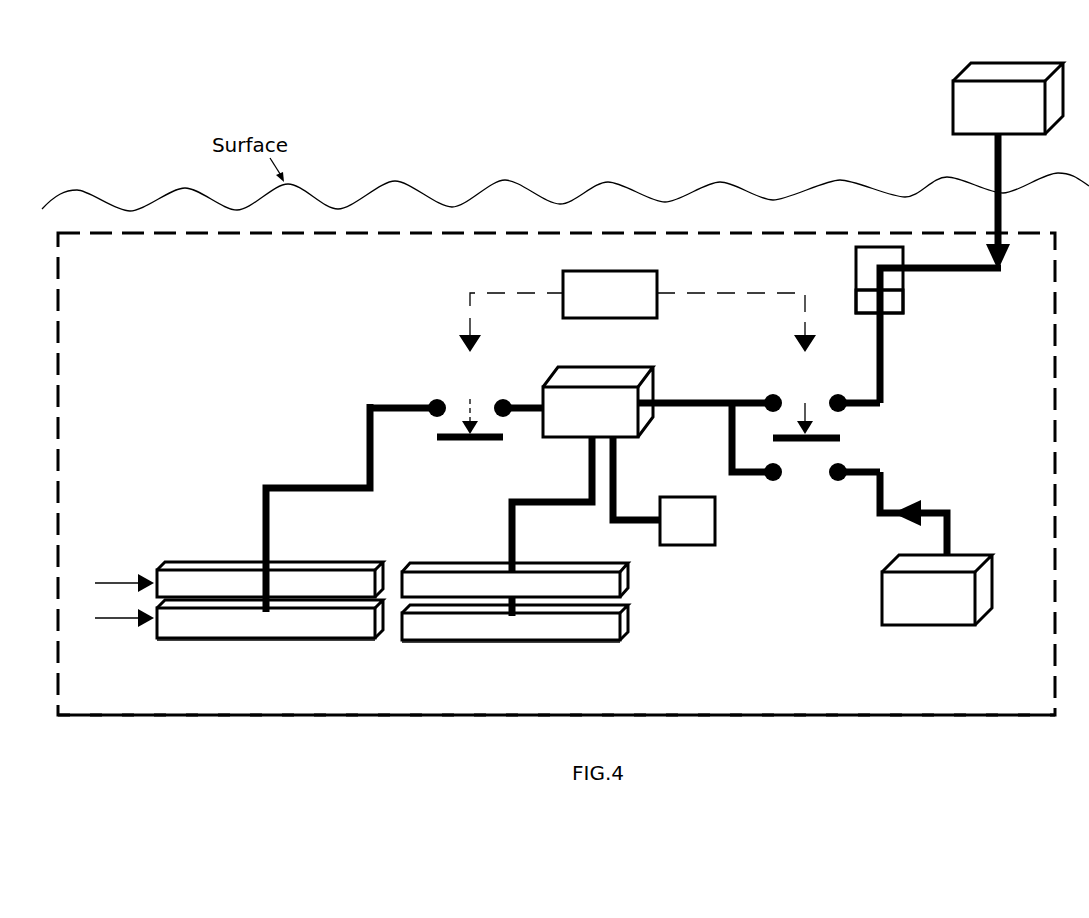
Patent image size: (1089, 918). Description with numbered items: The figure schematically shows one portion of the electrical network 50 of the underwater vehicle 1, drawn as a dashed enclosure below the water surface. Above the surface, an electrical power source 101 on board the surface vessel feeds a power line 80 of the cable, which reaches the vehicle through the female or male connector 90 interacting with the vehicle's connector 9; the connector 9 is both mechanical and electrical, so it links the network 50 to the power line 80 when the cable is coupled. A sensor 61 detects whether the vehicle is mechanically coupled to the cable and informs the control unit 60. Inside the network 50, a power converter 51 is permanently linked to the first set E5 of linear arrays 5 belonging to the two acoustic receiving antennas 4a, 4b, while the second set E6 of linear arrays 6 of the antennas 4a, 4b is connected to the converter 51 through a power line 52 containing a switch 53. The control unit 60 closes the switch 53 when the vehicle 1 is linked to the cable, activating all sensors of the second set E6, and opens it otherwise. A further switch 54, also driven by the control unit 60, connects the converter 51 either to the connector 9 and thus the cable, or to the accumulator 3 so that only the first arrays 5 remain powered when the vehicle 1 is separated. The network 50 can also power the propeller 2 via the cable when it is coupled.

The electrical power source 101 is at (953, 97).
The power line 80 is at (1005, 208).
The female or male connector 90 is at (856, 262).
The connector 9 is at (905, 283).
The sensor 61 is at (905, 302).
The control unit 60 is at (600, 271).
The switch 53 is at (465, 385).
The switch 54 is at (799, 390).
The power converter 51 is at (641, 430).
The power line 52 is at (304, 487).
The propeller 2 is at (716, 525).
The accumulator 3 is at (933, 626).
The linear array 6 is at (217, 567).
The linear array 5 is at (470, 565).
The acoustic receiving antenna 4a is at (110, 583).
The acoustic receiving antenna 4b is at (109, 618).
The second set of linear arrays E6 is at (228, 651).
The first set of linear arrays E5 is at (553, 648).
The underwater vehicle 1 is at (328, 717).
The electrical network 50 is at (790, 721).